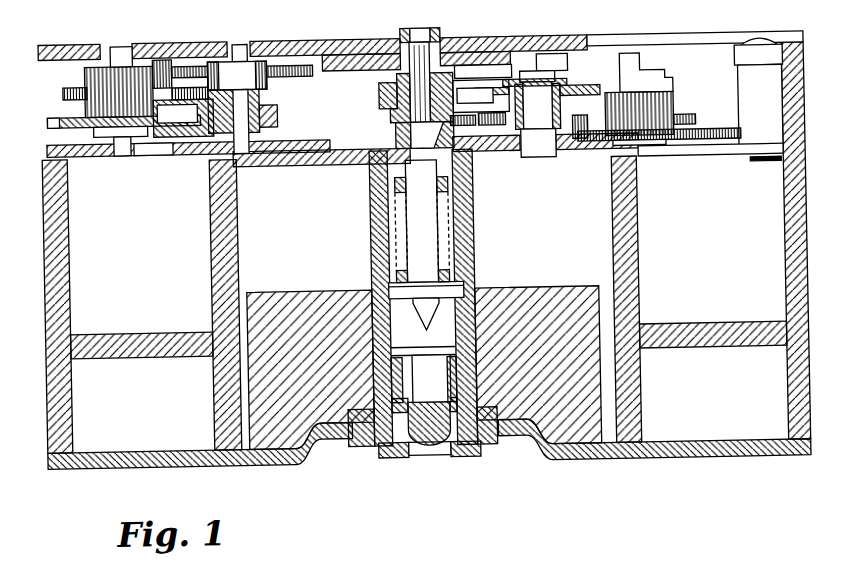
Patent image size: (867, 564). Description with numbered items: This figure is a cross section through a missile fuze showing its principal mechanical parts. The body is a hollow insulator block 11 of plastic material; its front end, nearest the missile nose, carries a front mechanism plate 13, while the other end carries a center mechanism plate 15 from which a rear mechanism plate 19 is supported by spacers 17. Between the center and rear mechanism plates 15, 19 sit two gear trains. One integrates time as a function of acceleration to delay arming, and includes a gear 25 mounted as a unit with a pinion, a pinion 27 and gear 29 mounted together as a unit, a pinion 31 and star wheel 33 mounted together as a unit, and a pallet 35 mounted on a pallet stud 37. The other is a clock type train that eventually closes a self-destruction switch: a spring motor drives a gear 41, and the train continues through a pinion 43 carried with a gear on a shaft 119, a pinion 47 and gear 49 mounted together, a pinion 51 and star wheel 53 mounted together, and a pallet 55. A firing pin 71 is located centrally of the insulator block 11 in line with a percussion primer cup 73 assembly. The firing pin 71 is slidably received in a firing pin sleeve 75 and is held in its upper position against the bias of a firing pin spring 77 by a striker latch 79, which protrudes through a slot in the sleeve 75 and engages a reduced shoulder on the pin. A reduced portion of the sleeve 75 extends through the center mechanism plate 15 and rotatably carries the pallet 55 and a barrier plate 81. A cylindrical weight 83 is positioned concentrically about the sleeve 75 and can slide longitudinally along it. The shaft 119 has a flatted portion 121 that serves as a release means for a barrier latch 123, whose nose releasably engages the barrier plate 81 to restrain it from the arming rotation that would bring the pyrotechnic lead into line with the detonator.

The insulator block 11 is at (65, 275).
The front mechanism plate 13 is at (296, 462).
The center mechanism plate 15 is at (193, 147).
The spacers 17 is at (749, 90).
The rear mechanism plate 19 is at (558, 40).
The gear 25 is at (298, 74).
The pinion 27 is at (189, 40).
The gear 29 is at (66, 85).
The pinion 31 is at (98, 101).
The star wheel 33 is at (76, 124).
The pallet 35 is at (281, 117).
The pallet stud 37 is at (242, 40).
The gear 41 is at (699, 122).
The pinion 43 is at (666, 110).
The pinion 47 is at (577, 143).
The gear 49 is at (491, 131).
The pinion 51 is at (516, 108).
The star wheel 53 is at (483, 96).
The pallet 55 is at (381, 93).
The firing pin 71 is at (433, 242).
The percussion primer cup 73 is at (429, 370).
The firing pin sleeve 75 is at (474, 273).
The firing pin spring 77 is at (394, 188).
The striker latch 79 is at (323, 164).
The barrier plate 81 is at (338, 58).
The cylindrical weight 83 is at (273, 292).
The shaft 119 is at (644, 146).
The flatted portion 121 is at (644, 60).
The barrier latch 123 is at (652, 64).